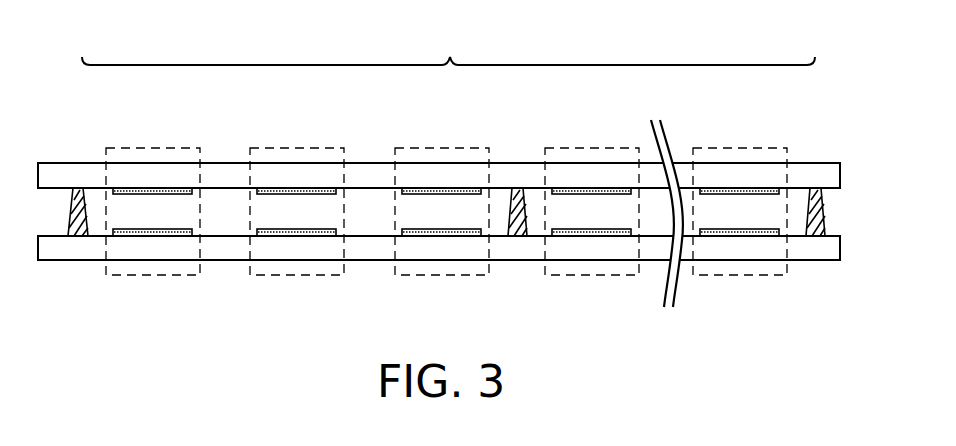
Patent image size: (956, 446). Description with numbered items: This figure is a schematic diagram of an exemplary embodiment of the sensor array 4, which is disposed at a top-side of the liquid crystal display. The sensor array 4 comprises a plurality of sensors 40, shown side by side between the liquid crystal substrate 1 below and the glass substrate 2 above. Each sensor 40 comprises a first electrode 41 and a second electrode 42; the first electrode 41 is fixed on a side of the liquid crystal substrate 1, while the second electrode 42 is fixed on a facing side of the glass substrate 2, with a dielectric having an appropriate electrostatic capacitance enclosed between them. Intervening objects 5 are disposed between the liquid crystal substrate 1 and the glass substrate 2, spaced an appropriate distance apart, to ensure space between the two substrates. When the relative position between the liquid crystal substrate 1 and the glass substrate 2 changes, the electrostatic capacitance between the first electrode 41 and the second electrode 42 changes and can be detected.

The liquid crystal substrate 1 is at (833, 255).
The glass substrate 2 is at (831, 166).
The sensor array 4 is at (448, 45).
The intervening object 5 is at (80, 240).
The sensor 40 is at (193, 147).
The first electrode 41 is at (151, 233).
The second electrode 42 is at (153, 190).